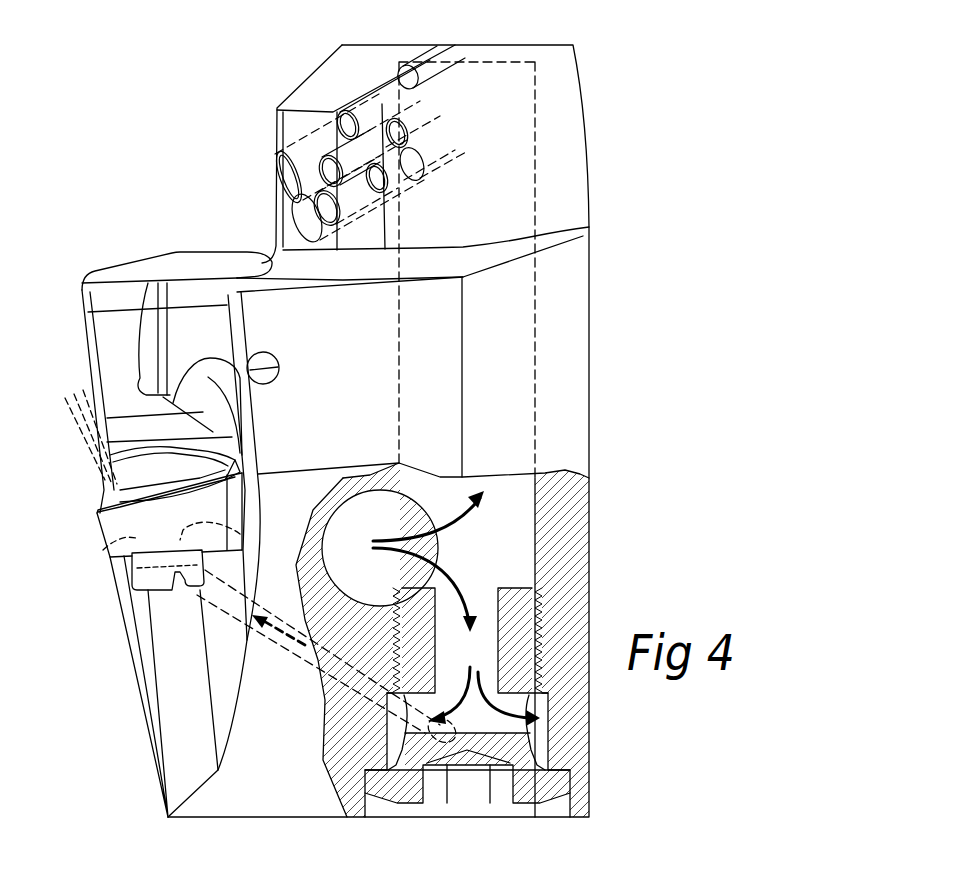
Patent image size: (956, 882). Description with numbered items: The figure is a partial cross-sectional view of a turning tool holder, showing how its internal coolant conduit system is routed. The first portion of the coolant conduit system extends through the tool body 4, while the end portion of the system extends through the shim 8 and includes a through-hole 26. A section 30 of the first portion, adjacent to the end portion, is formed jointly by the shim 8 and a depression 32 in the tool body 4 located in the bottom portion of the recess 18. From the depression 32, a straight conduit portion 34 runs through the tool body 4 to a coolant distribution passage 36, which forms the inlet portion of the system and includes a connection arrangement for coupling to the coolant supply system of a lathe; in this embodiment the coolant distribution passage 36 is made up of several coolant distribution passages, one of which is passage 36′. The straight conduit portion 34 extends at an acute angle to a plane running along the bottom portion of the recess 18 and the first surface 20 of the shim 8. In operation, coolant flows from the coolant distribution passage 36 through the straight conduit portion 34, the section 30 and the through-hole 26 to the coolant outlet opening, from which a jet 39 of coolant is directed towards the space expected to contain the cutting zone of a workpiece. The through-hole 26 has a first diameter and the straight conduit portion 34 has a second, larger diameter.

The tool body 4 is at (577, 349).
The shim 8 is at (107, 527).
The recess 18 is at (122, 388).
The first surface 20 is at (117, 568).
The through-hole 26 is at (103, 550).
The section 30 is at (166, 590).
The depression 32 is at (240, 534).
The straight conduit portion 34 is at (270, 617).
The coolant distribution passage 36 is at (514, 493).
The coolant distribution passage 36′ is at (485, 603).
The jet 39 is at (93, 446).